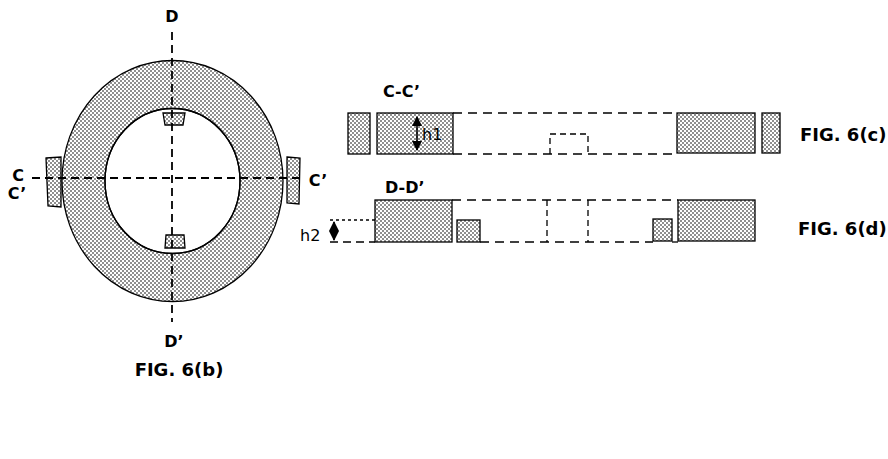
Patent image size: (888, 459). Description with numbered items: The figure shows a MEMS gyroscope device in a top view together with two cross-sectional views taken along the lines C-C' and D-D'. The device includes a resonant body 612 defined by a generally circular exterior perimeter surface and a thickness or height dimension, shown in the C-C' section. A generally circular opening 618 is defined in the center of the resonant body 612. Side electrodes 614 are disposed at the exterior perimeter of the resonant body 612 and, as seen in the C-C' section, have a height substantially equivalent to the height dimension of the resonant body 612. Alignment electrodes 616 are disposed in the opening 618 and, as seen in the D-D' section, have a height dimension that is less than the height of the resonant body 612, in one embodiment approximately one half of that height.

In FIG. 6B, the resonant body 612 is at (120, 98).
In FIG. 6C, the resonant body 612 is at (720, 108).
In FIG. 6D, the resonant body 612 is at (710, 228).
In FIG. 6B, the side electrodes 614 is at (50, 160).
In FIG. 6C, the side electrodes 614 is at (360, 123).
In FIG. 6D, the side electrodes 614 is at (567, 210).
In FIG. 6B, the alignment electrodes 616 is at (177, 115).
In FIG. 6C, the alignment electrodes 616 is at (566, 145).
In FIG. 6D, the alignment electrodes 616 is at (472, 232).
In FIG. 6B, the opening 618 is at (210, 148).
In FIG. 6C, the opening 618 is at (600, 102).
In FIG. 6D, the opening 618 is at (607, 212).